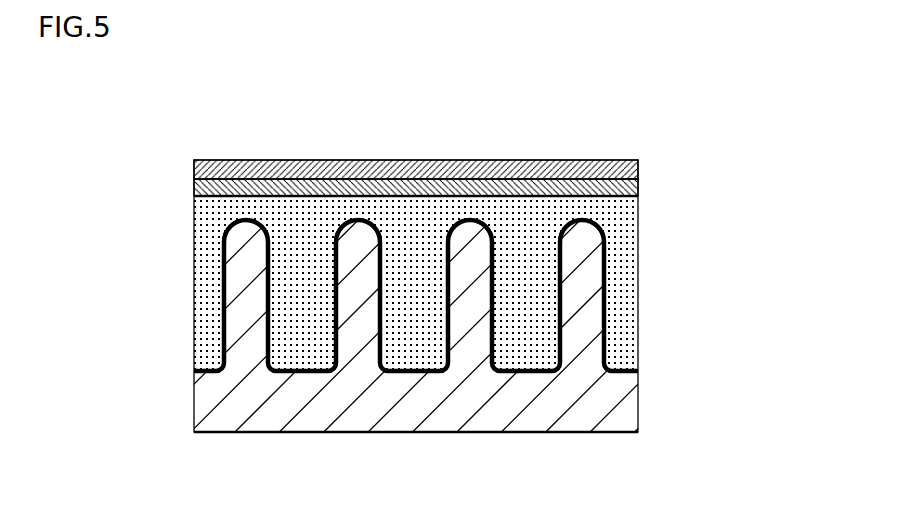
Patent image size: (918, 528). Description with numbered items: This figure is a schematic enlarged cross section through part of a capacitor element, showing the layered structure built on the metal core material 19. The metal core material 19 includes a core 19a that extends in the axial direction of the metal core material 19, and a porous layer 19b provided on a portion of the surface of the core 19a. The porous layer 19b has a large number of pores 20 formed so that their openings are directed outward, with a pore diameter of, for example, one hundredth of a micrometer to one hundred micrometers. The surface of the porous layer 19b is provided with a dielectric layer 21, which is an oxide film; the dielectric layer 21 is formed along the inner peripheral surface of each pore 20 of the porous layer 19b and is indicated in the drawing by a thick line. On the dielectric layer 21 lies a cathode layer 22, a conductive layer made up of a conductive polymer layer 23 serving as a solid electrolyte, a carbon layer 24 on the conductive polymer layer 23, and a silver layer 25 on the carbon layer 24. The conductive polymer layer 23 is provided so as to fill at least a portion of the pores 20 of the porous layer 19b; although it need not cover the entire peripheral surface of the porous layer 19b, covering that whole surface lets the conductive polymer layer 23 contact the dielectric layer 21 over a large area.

The metal core material 19 is at (459, 282).
The core 19a is at (178, 375).
The porous layer 19b is at (178, 220).
The pores 20 is at (268, 252).
The dielectric layer 21 is at (638, 295).
The cathode layer 22 is at (514, 205).
The conductive polymer layer 23 is at (476, 228).
The carbon layer 24 is at (638, 190).
The silver layer 25 is at (638, 169).